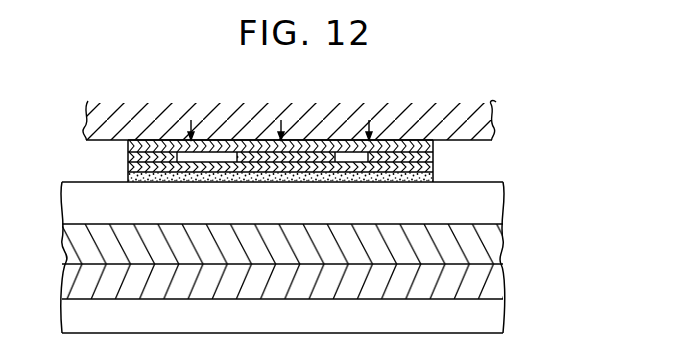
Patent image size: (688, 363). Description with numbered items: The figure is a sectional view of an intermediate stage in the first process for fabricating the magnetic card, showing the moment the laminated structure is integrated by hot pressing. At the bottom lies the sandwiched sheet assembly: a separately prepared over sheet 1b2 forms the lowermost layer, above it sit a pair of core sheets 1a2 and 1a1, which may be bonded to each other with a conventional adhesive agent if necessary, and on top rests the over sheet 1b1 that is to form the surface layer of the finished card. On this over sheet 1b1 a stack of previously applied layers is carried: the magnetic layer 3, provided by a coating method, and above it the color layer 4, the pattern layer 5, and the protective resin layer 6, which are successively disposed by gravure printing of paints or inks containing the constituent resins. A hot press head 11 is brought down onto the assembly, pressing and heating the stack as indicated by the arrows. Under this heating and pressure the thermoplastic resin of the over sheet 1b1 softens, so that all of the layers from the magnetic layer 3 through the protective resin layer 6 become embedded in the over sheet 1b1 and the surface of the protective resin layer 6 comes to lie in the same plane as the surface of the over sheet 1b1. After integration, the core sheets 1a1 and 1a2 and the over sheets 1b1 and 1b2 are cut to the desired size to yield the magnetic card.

The hot press head 11 is at (493, 122).
The protective resin layer 6 is at (127, 148).
The pattern layer 5 is at (127, 157).
The color layer 4 is at (434, 161).
The magnetic layer 3 is at (434, 174).
The over sheet 1b1 is at (504, 205).
The core sheet 1a1 is at (504, 245).
The core sheet 1a2 is at (504, 280).
The over sheet 1b2 is at (504, 314).